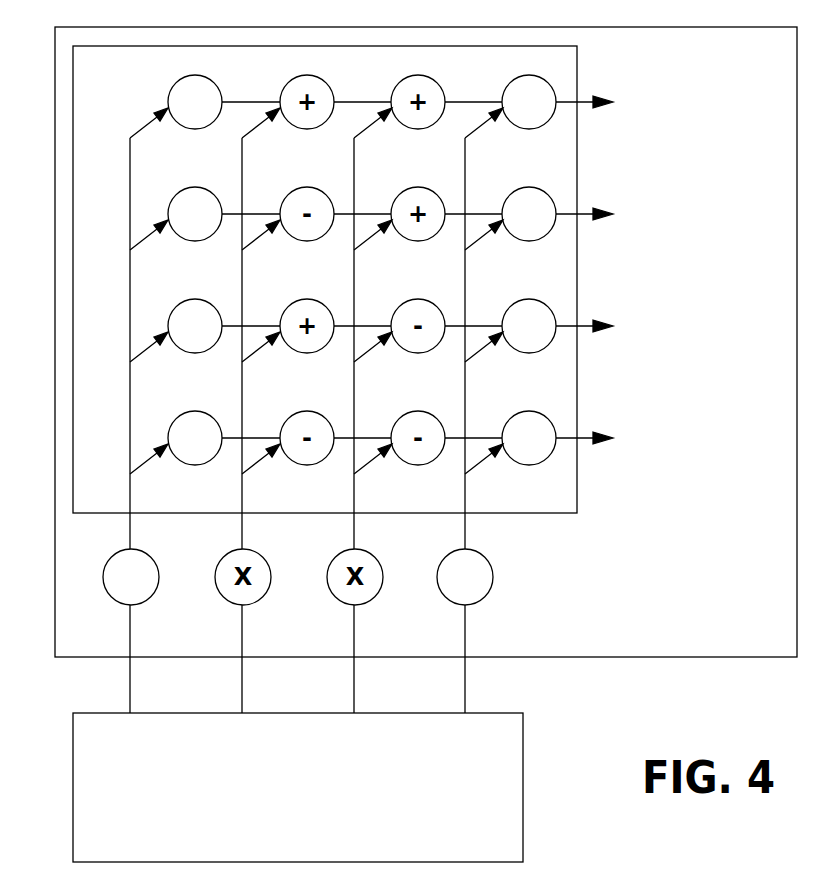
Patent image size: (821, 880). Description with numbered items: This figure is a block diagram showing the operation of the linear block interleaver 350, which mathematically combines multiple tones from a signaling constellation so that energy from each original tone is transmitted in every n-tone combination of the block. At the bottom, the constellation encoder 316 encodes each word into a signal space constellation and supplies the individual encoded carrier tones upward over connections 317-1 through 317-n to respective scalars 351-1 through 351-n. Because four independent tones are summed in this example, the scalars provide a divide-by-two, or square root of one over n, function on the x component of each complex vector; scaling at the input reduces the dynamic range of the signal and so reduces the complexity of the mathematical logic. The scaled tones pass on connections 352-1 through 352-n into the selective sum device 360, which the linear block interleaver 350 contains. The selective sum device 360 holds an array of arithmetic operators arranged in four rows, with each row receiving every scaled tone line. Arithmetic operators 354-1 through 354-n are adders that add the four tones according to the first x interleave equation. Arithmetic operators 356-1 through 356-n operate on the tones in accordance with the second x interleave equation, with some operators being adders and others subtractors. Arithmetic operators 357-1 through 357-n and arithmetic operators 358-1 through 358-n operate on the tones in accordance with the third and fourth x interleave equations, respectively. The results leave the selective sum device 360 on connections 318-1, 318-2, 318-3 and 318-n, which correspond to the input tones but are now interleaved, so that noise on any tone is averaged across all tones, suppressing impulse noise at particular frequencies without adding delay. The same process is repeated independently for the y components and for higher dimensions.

The linear block interleaver 350 is at (772, 72).
The selective sum device 360 is at (122, 119).
The constellation encoder 316 is at (123, 744).
The arithmetic operator 354-n is at (195, 75).
The arithmetic operator 354-1 is at (529, 75).
The arithmetic operator 356-n is at (195, 187).
The arithmetic operator 356-1 is at (529, 187).
The arithmetic operator 357-n is at (195, 299).
The arithmetic operator 357-1 is at (529, 299).
The arithmetic operator 358-n is at (195, 411).
The arithmetic operator 358-1 is at (529, 411).
The connection 352-n is at (130, 494).
The connection 352-1 is at (465, 494).
The scalar 351-n is at (159, 577).
The scalar 351-1 is at (493, 577).
The connection 317-n is at (130, 684).
The connection 317-1 is at (465, 682).
The connection 318-1 is at (617, 102).
The connection 318-2 is at (617, 214).
The connection 318-3 is at (617, 326).
The connection 318-n is at (618, 438).